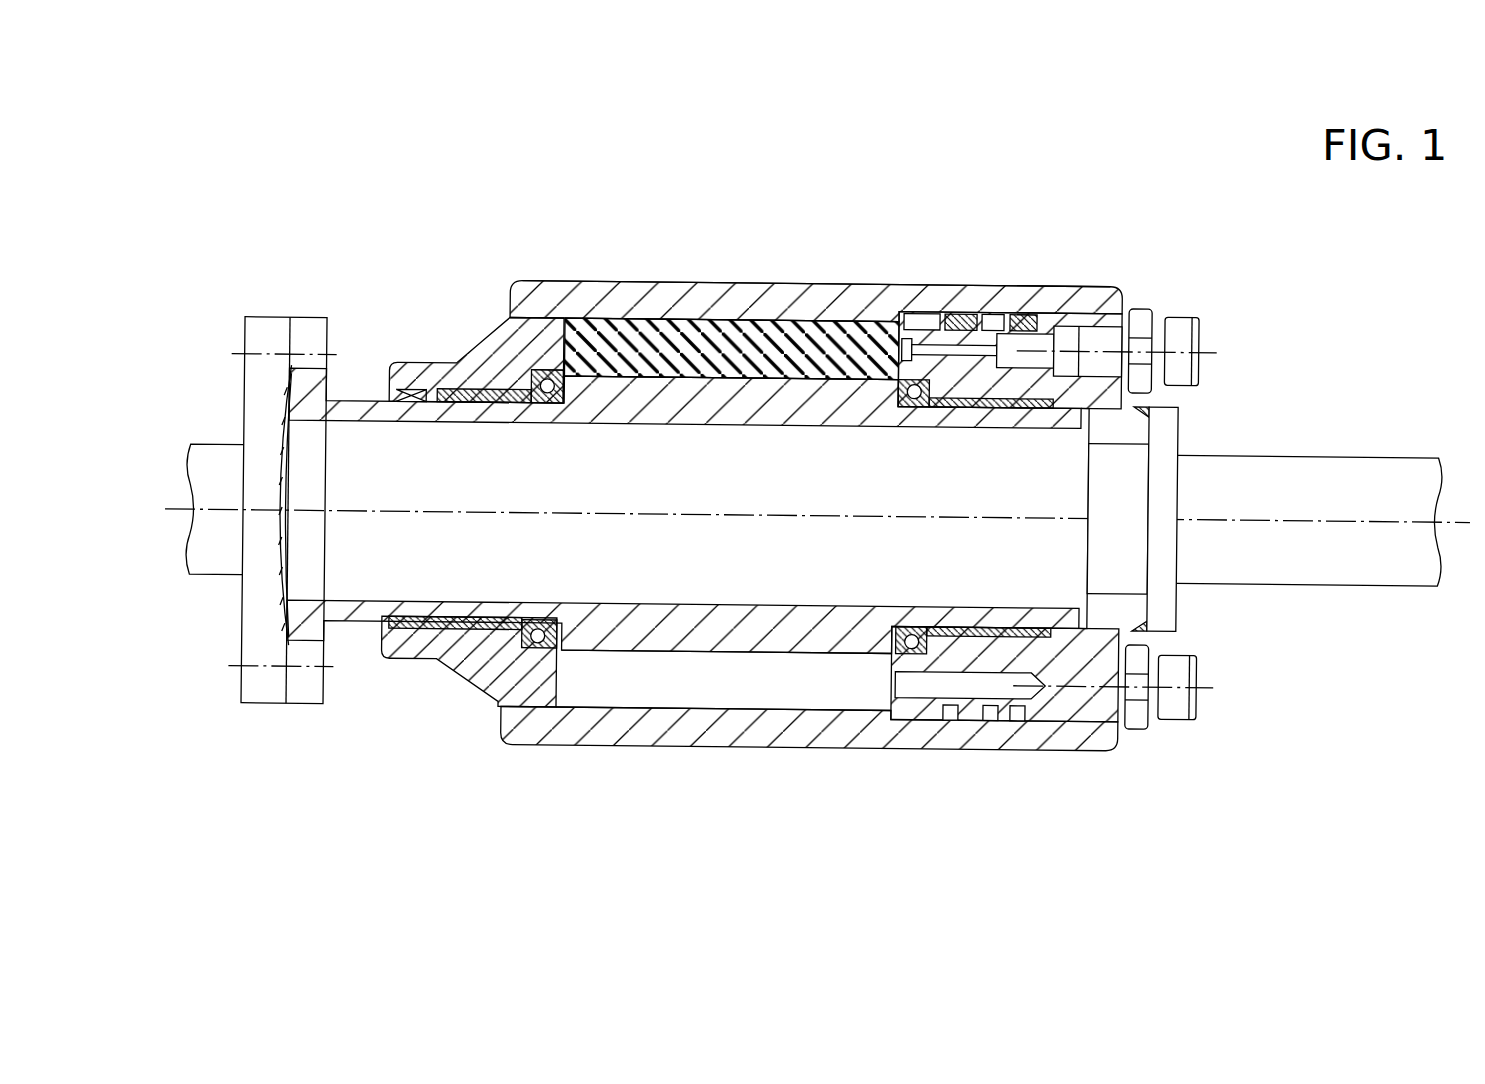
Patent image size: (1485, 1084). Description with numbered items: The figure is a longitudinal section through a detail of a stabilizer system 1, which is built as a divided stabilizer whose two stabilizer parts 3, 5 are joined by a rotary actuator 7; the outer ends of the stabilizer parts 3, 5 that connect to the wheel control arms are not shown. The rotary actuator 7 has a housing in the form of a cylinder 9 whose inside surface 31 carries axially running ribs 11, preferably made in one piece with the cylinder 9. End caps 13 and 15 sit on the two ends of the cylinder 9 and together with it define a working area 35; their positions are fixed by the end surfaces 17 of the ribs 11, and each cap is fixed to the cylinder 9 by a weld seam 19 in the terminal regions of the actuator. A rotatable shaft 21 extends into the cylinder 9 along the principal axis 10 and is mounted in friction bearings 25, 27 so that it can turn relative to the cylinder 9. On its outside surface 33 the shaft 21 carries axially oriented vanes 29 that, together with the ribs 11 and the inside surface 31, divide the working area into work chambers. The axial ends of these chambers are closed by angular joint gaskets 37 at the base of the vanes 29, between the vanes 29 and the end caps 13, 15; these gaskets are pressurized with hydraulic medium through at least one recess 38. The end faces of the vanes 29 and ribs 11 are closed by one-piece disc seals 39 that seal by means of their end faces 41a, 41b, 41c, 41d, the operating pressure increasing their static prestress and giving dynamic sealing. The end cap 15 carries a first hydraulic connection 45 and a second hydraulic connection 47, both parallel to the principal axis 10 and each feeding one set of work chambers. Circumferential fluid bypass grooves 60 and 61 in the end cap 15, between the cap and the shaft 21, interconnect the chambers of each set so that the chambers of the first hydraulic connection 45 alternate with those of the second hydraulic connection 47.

The stabilizer system 1 is at (369, 780).
The stabilizer part 3 is at (214, 586).
The stabilizer part 5 is at (1346, 582).
The rotary actuator 7 is at (730, 758).
The cylinder 9 is at (584, 752).
The principal axis 10 is at (198, 522).
The ribs 11 is at (743, 687).
The end cap 13 is at (461, 376).
The end cap 15 is at (1122, 734).
The end surfaces 17 is at (548, 318).
The weld seam 19 is at (514, 287).
The shaft 21 is at (311, 457).
The friction bearing 25 is at (1010, 382).
The friction bearing 27 is at (447, 383).
The vanes 29 is at (579, 418).
The inside surface 31 is at (710, 313).
The outside surface 33 is at (664, 656).
The working area 35 is at (832, 691).
The angular joint gaskets 37 is at (556, 382).
The recess 38 is at (551, 369).
The seals 39 is at (746, 342).
The end face 41a is at (916, 318).
The end face 41b is at (478, 363).
The end face 41c is at (662, 284).
The end face 41d is at (654, 381).
The first hydraulic connection 45 is at (1183, 345).
The second hydraulic connection 47 is at (1174, 701).
The fluid bypass groove 60 is at (1022, 719).
The fluid bypass groove 61 is at (960, 721).